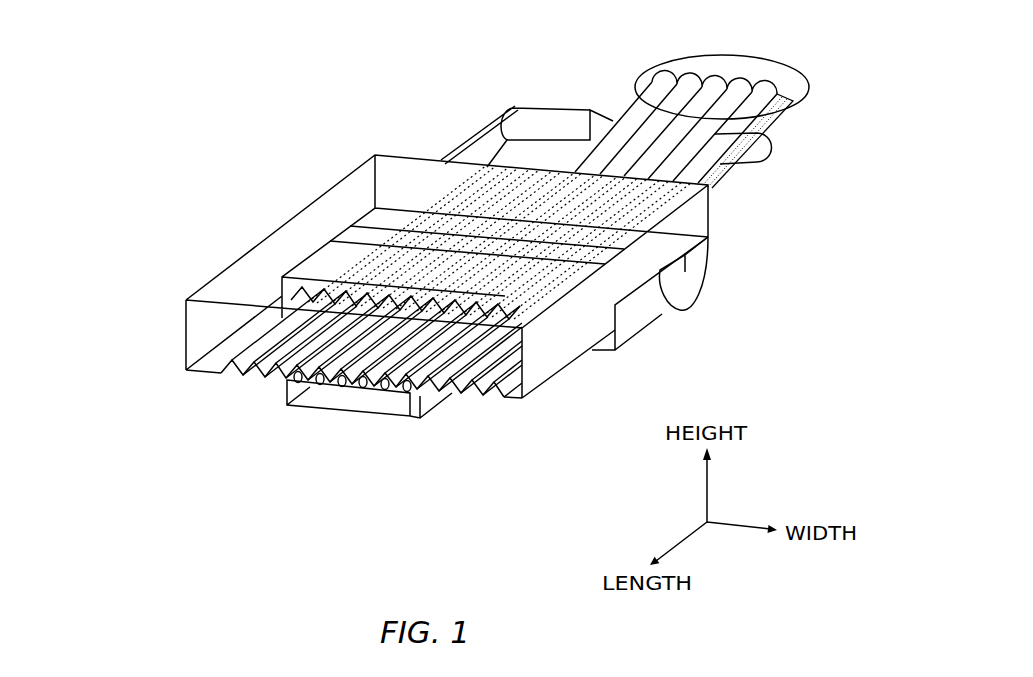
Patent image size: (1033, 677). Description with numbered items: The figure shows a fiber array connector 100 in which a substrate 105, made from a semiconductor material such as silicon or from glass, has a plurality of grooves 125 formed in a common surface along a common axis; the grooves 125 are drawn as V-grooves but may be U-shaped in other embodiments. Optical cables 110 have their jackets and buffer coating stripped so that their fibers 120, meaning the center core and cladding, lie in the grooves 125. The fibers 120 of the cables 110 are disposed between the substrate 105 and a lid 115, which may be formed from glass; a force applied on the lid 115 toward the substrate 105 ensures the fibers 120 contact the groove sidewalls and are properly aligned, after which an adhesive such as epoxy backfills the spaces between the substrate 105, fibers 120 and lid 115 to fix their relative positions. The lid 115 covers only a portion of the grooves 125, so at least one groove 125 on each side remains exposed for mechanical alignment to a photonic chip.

The fiber array connector 100 is at (391, 76).
The substrate 105 is at (302, 212).
The optical cables 110 is at (722, 55).
The lid 115 is at (332, 410).
The fibers 120 is at (407, 385).
The grooves 125 is at (240, 382).